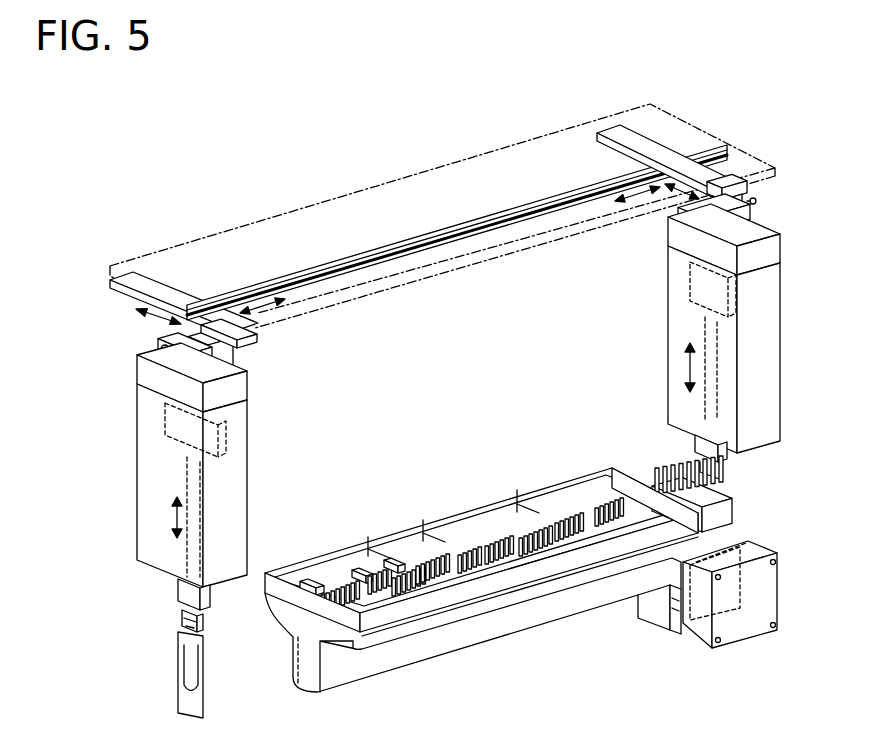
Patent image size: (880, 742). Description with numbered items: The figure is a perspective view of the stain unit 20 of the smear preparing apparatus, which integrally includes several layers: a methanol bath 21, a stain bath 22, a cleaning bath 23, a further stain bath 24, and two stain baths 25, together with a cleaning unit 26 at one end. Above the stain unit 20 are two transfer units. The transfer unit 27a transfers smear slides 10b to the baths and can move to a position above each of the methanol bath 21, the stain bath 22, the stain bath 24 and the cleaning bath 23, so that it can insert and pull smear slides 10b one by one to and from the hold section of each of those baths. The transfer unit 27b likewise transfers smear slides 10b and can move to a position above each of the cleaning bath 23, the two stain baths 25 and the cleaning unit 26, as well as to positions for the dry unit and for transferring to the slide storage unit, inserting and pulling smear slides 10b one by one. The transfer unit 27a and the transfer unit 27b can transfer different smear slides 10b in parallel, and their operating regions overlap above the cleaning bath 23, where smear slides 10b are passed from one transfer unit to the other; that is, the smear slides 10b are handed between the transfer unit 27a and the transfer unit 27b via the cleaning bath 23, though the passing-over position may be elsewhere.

The smear slide 10b is at (310, 560).
The stain unit 20 is at (518, 543).
The methanol bath 21 is at (296, 556).
The stain bath 22 is at (353, 535).
The cleaning bath 23 is at (428, 511).
The stain bath 24 is at (400, 522).
The stain bath 25 is at (480, 502).
The cleaning unit 26 is at (602, 463).
The transfer unit 27a is at (258, 440).
The transfer unit 27b is at (656, 300).